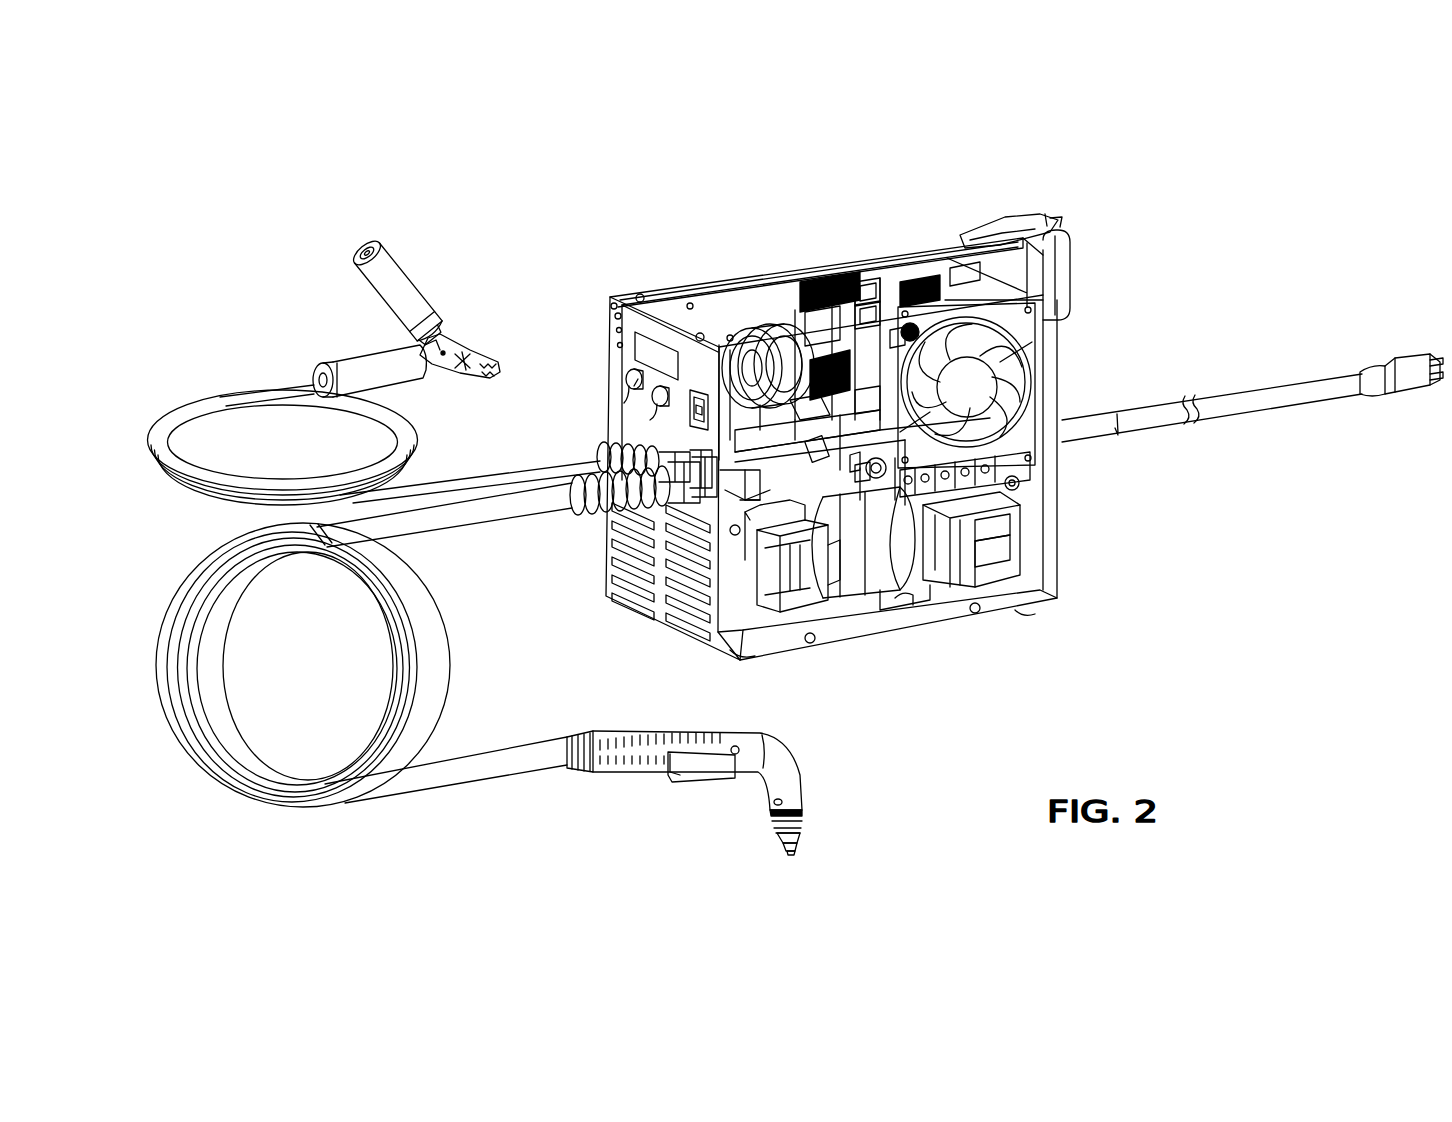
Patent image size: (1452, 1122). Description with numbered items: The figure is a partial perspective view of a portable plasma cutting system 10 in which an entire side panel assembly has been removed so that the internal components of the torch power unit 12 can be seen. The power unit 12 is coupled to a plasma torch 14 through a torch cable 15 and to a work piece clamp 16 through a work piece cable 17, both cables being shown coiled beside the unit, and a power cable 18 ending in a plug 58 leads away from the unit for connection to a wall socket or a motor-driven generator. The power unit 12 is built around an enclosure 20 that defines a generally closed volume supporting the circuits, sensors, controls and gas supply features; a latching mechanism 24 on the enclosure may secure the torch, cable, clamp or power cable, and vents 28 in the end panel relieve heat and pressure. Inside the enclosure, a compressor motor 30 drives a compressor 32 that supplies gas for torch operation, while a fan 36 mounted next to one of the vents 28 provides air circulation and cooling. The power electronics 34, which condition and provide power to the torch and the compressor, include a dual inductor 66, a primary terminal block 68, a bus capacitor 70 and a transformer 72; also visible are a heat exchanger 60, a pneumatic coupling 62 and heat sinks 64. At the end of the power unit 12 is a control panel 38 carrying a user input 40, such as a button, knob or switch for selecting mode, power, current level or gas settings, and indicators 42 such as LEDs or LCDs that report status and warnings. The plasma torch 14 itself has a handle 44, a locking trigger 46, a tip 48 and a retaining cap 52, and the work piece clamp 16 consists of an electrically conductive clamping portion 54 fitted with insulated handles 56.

The portable plasma cutting system 10 is at (1129, 231).
The torch power unit 12 is at (641, 255).
The plasma torch 14 is at (798, 737).
The torch cable 15 is at (435, 626).
The work piece clamp 16 is at (409, 248).
The work piece cable 17 is at (410, 433).
The power cable 18 is at (1250, 404).
The enclosure 20 is at (684, 283).
The latching mechanism 24 is at (1003, 228).
The vents 28 is at (690, 605).
The compressor motor 30 is at (862, 572).
The compressor 32 is at (785, 590).
The power electronics 34 is at (975, 578).
The fan 36 is at (1015, 372).
The control panel 38 is at (620, 398).
The user input 40 is at (684, 410).
The indicators 42 is at (612, 310).
The handle 44 is at (625, 764).
The locking trigger 46 is at (695, 782).
The tip 48 is at (796, 852).
The retaining cap 52 is at (802, 820).
The clamping portion 54 is at (473, 347).
The insulated handles 56 is at (378, 302).
The plug 58 is at (1390, 365).
The heat exchanger 60 is at (742, 330).
The pneumatic coupling 62 is at (766, 332).
The heat sinks 64 is at (812, 292).
The dual inductor 66 is at (960, 588).
The primary terminal block 68 is at (1033, 482).
The bus capacitor 70 is at (866, 480).
The transformer 72 is at (862, 332).